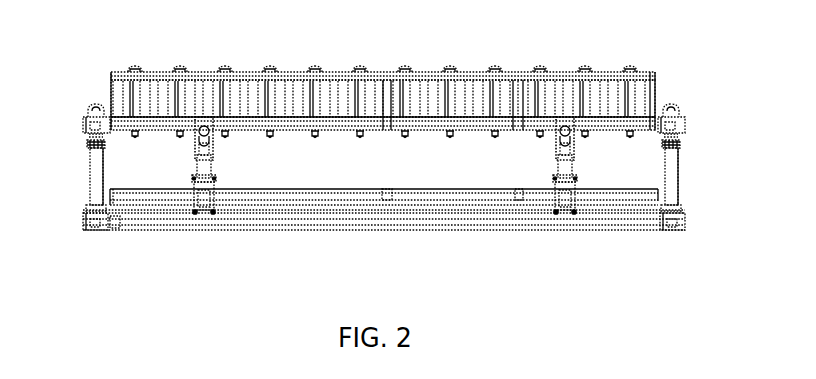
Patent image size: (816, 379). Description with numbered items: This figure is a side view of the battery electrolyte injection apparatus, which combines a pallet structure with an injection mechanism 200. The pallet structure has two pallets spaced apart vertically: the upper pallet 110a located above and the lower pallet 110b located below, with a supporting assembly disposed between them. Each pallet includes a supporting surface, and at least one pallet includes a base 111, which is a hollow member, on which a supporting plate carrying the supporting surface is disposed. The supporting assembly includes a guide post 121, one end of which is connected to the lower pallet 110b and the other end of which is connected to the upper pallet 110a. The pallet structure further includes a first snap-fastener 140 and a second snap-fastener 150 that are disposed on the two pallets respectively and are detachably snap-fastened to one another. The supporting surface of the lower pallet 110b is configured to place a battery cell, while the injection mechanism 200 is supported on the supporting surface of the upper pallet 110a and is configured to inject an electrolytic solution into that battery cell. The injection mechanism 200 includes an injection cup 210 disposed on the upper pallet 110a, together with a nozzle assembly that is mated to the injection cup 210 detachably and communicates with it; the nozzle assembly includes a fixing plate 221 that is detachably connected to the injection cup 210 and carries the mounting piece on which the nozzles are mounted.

The injection mechanism 200 is at (127, 76).
The injection cup 210 is at (238, 97).
The fixing plate 221 is at (322, 137).
The base 111 is at (112, 122).
The guide post 121 is at (98, 172).
The upper pallet 110a is at (654, 129).
The lower pallet 110b is at (626, 218).
The second snap-fastener 150 is at (190, 205).
The first snap-fastener 140 is at (215, 147).